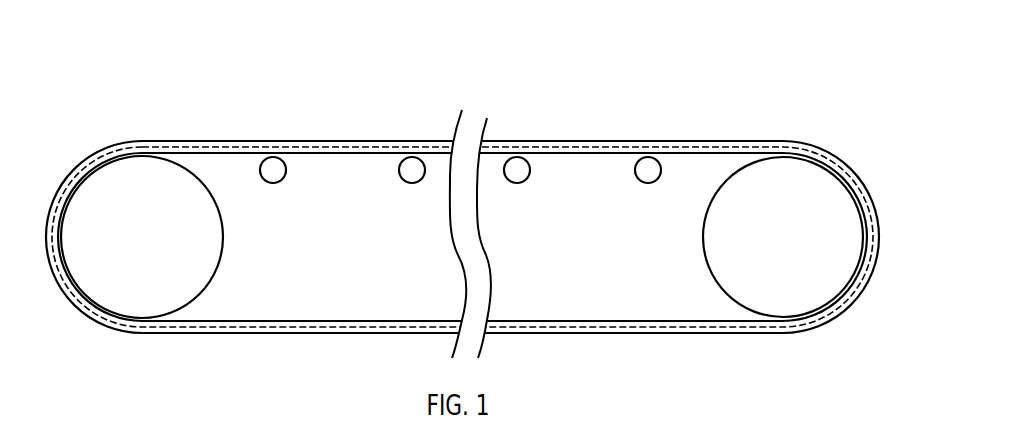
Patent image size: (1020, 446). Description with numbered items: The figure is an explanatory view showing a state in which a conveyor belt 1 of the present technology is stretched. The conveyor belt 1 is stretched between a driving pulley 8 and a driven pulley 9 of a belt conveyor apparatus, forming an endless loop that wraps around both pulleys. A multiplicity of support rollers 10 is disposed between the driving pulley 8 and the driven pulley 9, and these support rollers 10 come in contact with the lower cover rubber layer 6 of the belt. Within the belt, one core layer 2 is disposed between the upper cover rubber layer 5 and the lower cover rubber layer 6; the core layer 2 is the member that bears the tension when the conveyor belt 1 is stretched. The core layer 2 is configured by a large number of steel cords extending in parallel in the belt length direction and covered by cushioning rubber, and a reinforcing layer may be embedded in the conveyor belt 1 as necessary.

The conveyor belt 1 is at (462, 167).
The core layer 2 is at (585, 148).
The upper cover rubber layer 5 is at (343, 145).
The lower cover rubber layer 6 is at (322, 153).
The driving pulley 8 is at (105, 178).
The driven pulley 9 is at (815, 182).
The support rollers 10 is at (272, 165).